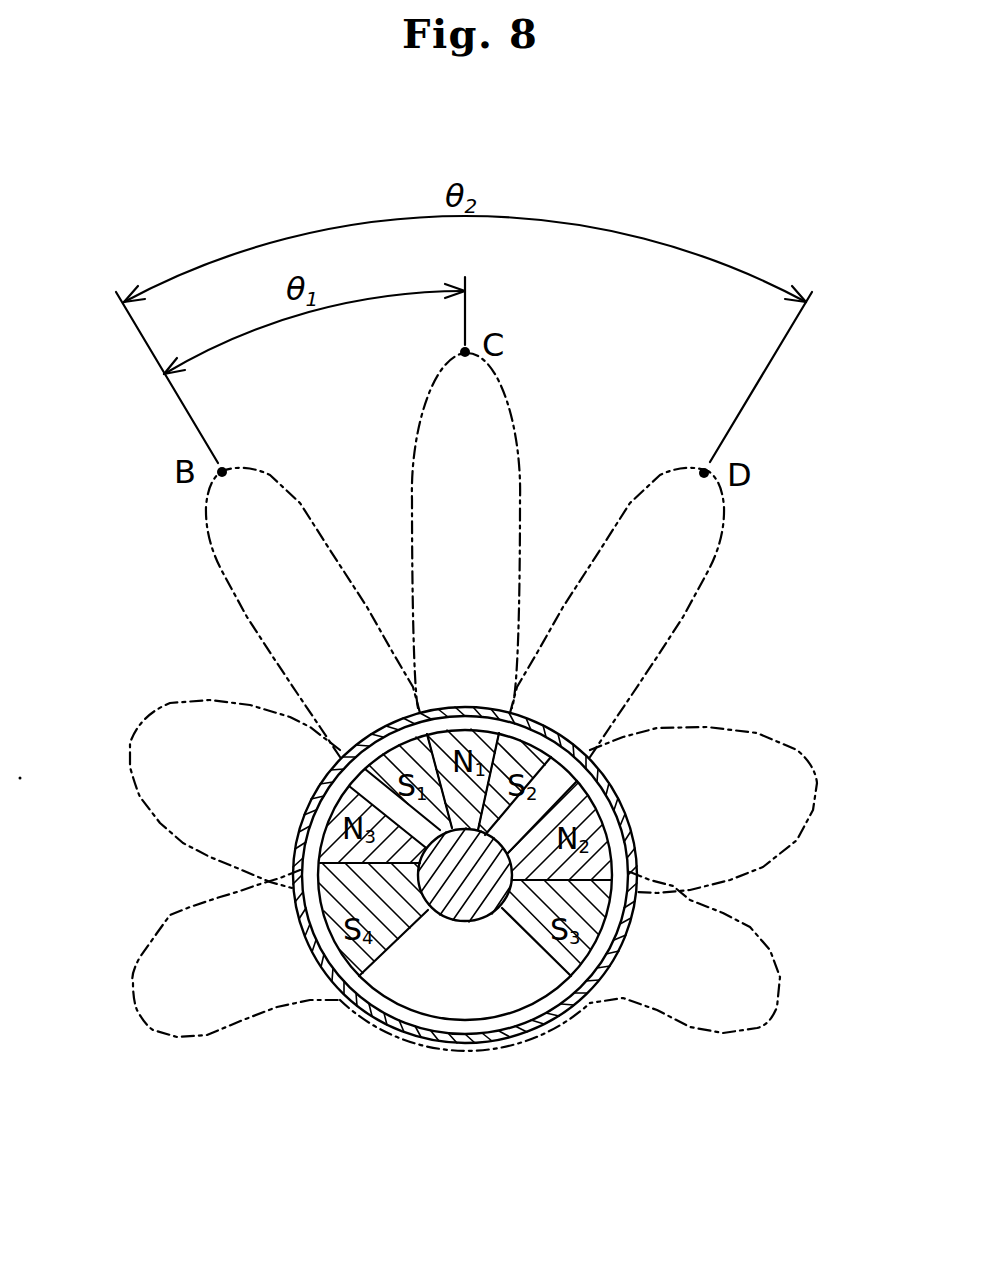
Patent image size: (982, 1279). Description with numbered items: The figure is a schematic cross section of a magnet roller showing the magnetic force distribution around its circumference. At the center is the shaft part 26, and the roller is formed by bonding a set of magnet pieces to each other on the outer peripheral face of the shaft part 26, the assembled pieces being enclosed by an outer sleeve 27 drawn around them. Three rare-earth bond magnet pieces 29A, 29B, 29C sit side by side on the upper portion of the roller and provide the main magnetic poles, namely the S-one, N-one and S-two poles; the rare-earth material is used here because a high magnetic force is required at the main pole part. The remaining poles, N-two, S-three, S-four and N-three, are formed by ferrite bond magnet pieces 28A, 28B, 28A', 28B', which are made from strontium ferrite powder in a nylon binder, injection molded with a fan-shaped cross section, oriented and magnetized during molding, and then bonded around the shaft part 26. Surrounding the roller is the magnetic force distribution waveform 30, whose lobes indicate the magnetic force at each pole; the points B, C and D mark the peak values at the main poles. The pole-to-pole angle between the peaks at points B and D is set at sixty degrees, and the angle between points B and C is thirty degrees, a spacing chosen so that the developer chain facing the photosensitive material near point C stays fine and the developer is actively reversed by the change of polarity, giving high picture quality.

The shaft part 26 is at (452, 921).
The rotor yoke ring 27 is at (545, 1014).
The ferrite bond magnet piece 28A is at (247, 828).
The ferrite bond magnet piece 28B is at (248, 919).
The ferrite bond magnet piece 28A' is at (694, 837).
The ferrite bond magnet piece 28B' is at (689, 928).
The rare-earth bond magnet piece 29A is at (345, 730).
The rare-earth bond magnet piece 29B is at (487, 730).
The rare-earth bond magnet piece 29C is at (590, 750).
The magnetic force distribution waveform 30 is at (520, 465).